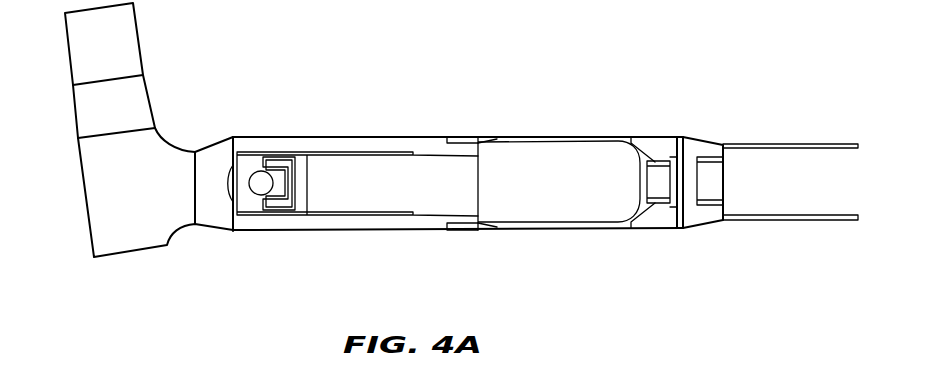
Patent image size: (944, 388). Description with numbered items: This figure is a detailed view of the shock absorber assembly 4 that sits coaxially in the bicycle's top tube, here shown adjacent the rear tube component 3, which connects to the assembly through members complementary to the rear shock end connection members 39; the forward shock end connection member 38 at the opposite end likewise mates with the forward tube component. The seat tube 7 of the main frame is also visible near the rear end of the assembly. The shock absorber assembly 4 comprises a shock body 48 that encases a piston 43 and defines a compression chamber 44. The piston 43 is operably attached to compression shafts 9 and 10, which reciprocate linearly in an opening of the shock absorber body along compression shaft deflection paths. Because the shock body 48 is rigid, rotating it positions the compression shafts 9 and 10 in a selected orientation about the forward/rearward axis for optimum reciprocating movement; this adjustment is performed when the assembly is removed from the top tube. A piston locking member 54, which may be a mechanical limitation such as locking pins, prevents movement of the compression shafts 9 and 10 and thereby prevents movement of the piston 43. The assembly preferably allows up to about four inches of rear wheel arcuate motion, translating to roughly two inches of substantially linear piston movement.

The seat tube 7 is at (91, 231).
The rear shock end connection member 39 is at (227, 128).
The piston locking member 54 is at (243, 178).
The compression shaft 10 is at (265, 170).
The compression shaft 9 is at (268, 178).
The piston 43 is at (327, 202).
The shock absorber assembly 4 is at (460, 137).
The compression chamber 44 is at (520, 152).
The shock body 48 is at (387, 238).
The forward shock end connection member 38 is at (687, 135).
The rear tube component 3 is at (787, 143).